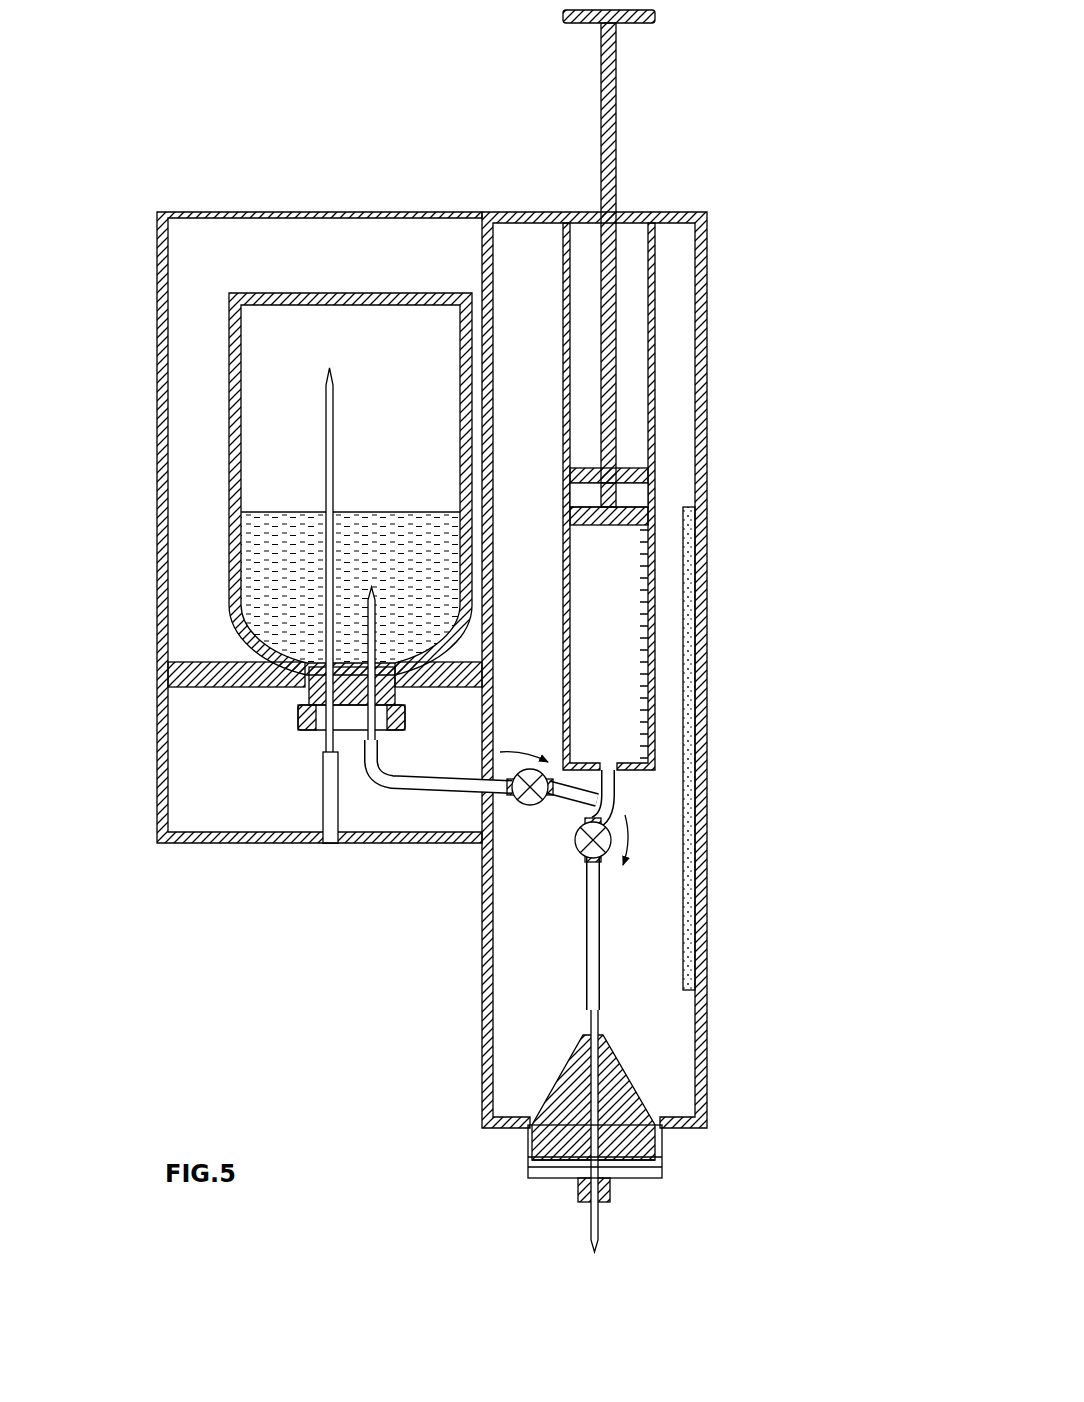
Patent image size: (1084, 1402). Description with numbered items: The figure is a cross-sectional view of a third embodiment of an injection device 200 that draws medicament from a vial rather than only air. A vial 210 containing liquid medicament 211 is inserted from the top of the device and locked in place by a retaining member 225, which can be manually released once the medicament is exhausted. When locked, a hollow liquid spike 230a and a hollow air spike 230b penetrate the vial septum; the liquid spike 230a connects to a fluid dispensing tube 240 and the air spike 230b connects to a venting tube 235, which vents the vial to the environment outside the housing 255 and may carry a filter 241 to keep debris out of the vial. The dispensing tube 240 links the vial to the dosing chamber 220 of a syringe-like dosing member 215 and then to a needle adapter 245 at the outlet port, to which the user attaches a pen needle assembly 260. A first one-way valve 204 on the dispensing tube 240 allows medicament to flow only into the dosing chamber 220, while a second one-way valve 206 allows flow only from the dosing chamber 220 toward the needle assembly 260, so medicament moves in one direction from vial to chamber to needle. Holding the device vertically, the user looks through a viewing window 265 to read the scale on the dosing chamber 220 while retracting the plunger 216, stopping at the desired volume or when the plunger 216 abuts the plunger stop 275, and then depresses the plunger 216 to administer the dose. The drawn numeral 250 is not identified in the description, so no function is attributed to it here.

The injection device 200 is at (138, 170).
The first one-way valve 204 is at (528, 806).
The second one-way valve 206 is at (577, 851).
The vial 210 is at (350, 460).
The liquid medicament 211 is at (302, 548).
The dosing member 215 is at (656, 340).
The plunger 216 is at (655, 25).
The dosing chamber 220 is at (633, 637).
The retaining member 225 is at (172, 665).
The liquid spike 230a is at (378, 598).
The air spike 230b is at (337, 402).
The venting tube 235 is at (322, 782).
The fluid dispensing tube 240 is at (516, 716).
The filter 241 is at (333, 843).
The needle adapter 245 is at (663, 1160).
The syringe housing 250 is at (746, 771).
The housing 255 is at (708, 232).
The needle assembly 260 is at (541, 1180).
The viewing window 265 is at (697, 550).
The plunger stop 275 is at (649, 462).